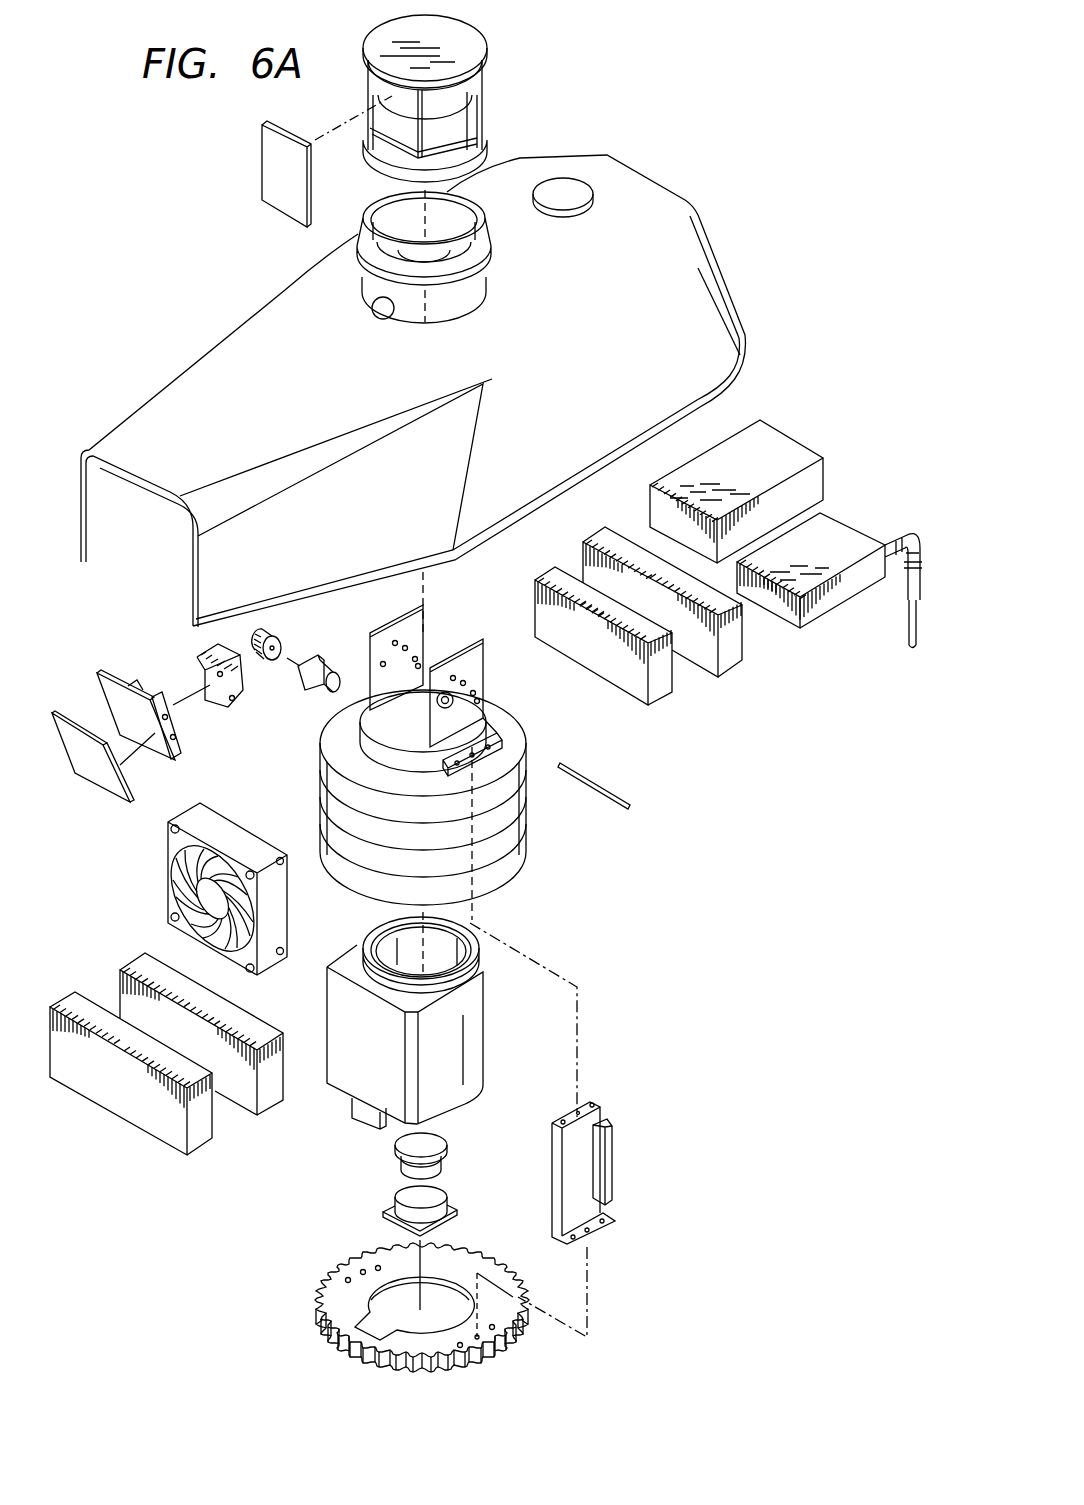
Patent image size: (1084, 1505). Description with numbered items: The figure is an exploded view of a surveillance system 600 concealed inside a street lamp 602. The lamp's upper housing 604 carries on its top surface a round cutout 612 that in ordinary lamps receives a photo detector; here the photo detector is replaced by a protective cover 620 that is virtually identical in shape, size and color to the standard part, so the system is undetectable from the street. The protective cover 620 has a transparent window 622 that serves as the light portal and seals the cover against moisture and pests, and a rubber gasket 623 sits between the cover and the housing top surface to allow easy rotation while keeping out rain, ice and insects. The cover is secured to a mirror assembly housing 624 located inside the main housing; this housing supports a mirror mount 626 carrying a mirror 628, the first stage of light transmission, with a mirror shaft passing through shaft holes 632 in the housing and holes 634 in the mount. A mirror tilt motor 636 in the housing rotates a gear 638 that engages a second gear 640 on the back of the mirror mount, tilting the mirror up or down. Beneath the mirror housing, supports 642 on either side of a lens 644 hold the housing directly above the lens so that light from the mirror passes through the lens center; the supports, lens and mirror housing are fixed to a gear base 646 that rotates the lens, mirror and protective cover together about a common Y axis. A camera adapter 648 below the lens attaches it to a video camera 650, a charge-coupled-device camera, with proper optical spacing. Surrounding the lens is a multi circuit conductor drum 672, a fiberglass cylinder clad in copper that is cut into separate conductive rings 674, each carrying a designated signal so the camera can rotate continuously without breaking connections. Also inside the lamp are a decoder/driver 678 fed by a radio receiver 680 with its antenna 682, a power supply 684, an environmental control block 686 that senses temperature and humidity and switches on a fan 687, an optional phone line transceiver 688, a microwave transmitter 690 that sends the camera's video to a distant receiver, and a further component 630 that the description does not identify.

The surveillance system 600 is at (611, 91).
The street lamp 602 is at (431, 383).
The upper housing 604 is at (630, 186).
The round cutout 612 is at (370, 306).
The protective cover 620 is at (470, 102).
The transparent window 622 is at (262, 160).
The rubber gasket 623 is at (490, 246).
The mirror assembly housing 624 is at (483, 666).
The mirror mount 626 is at (102, 690).
The mirror 628 is at (98, 776).
The pin 630 is at (596, 782).
The shaft holes 632 is at (445, 695).
The holes 634 is at (177, 729).
The mirror tilt motor 636 is at (330, 666).
The gear 638 is at (271, 662).
The second gear 640 is at (200, 672).
The supports 642 is at (608, 1156).
The lens 644 is at (482, 1028).
The gear base 646 is at (340, 1282).
The camera adapter 648 is at (400, 1147).
The video camera 650 is at (400, 1196).
The multi circuit conductor drum 672 is at (410, 805).
The conductive rings 674 is at (337, 784).
The decoder/driver 678 is at (140, 958).
The radio receiver 680 is at (840, 537).
The antenna 682 is at (905, 602).
The power supply 684 is at (118, 1105).
The environmental control block 686 is at (660, 692).
The fan 687 is at (178, 866).
The phone line transceiver 688 is at (730, 667).
The microwave transmitter 690 is at (783, 442).